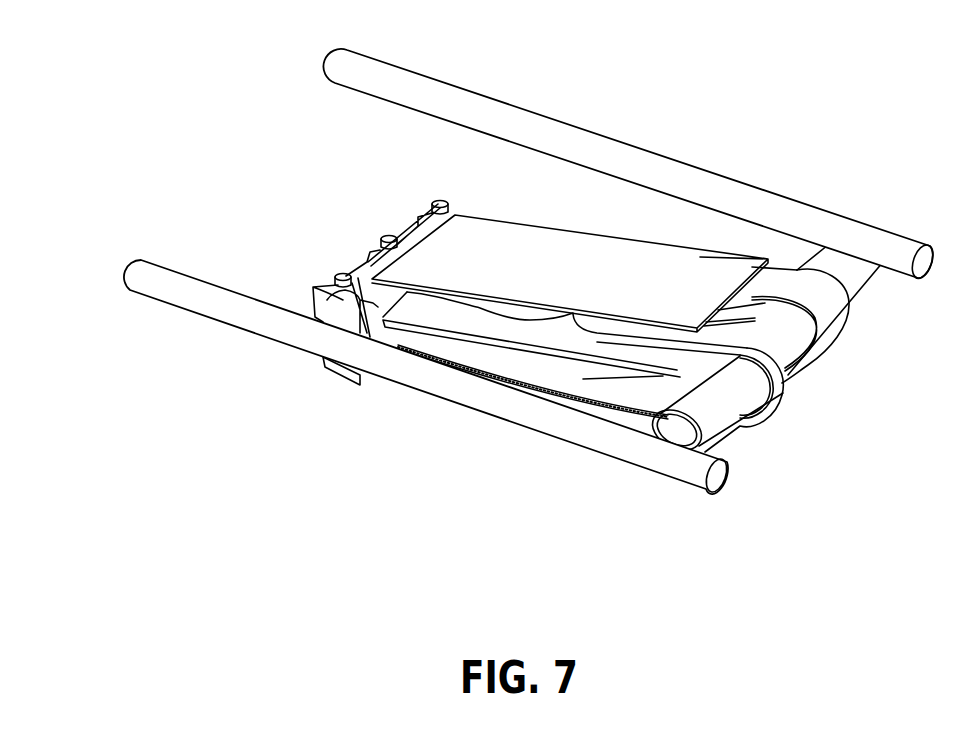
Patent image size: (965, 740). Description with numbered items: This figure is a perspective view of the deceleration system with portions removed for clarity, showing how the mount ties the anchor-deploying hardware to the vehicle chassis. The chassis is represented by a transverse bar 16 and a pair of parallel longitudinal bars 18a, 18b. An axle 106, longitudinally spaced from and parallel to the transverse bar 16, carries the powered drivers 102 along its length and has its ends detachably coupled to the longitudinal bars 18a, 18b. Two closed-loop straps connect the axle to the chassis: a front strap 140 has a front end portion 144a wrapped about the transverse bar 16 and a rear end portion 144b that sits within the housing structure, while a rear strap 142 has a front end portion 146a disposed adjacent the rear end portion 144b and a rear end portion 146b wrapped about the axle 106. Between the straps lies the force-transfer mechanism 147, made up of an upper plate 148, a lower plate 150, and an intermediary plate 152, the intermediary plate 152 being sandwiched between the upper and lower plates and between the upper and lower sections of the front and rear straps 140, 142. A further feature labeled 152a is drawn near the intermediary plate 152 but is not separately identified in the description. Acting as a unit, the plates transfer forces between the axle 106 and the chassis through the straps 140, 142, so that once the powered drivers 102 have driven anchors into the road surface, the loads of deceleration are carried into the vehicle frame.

The transverse bar 16 is at (867, 272).
The first longitudinal bar 18a is at (620, 158).
The second longitudinal bar 18b is at (148, 286).
The powered drivers 102 is at (435, 201).
The axle 106 is at (378, 307).
The front strap 140 is at (617, 370).
The rear strap 142 is at (463, 348).
The front end portion 144a is at (780, 377).
The rear end portion 144b is at (592, 310).
The front end portion 146a is at (523, 312).
The rear end portion 146b is at (392, 338).
The force-transfer mechanism 147 is at (783, 263).
The upper plate 148 is at (553, 242).
The lower plate 150 is at (573, 385).
The intermediary plate 152 is at (663, 372).
The rear roller 152a is at (810, 360).